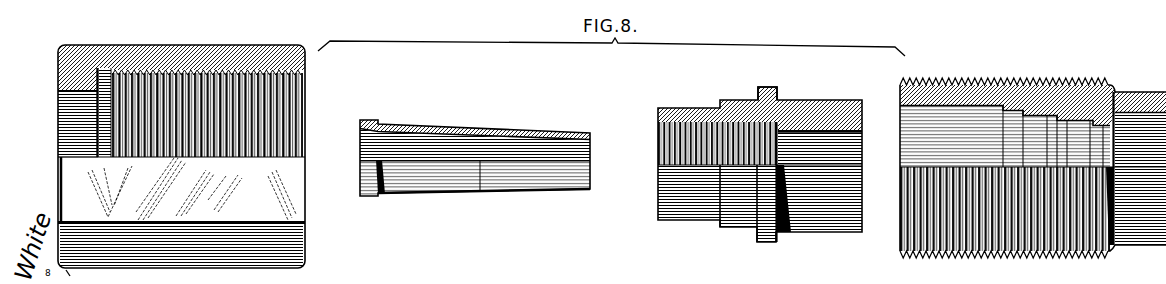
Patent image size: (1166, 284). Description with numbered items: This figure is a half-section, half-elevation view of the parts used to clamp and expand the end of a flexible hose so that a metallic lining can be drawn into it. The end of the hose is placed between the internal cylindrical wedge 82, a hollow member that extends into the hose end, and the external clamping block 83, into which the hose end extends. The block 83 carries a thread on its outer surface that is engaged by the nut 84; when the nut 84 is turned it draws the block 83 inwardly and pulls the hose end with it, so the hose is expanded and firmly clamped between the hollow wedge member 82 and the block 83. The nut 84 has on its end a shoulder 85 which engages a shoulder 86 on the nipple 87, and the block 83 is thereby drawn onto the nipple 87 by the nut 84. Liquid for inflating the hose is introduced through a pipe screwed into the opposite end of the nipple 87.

The internal cylindrical wedge 82 is at (481, 127).
The external clamping block 83 is at (1041, 95).
The nut 84 is at (188, 52).
The shoulder 85 is at (72, 72).
The shoulder 86 is at (769, 88).
The nipple 87 is at (824, 108).